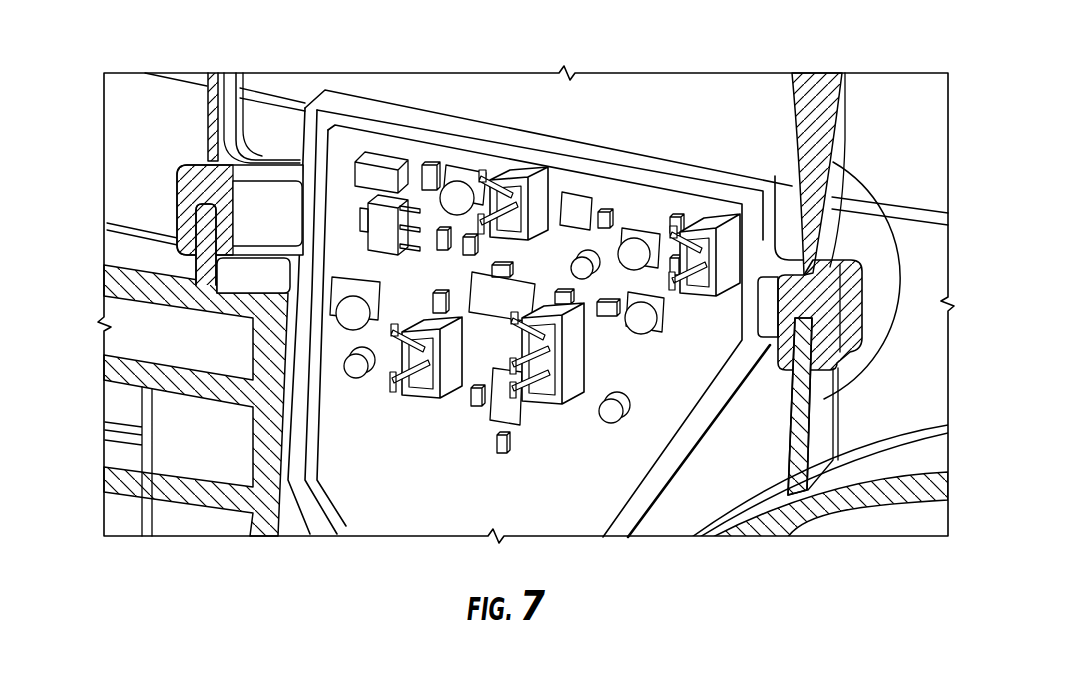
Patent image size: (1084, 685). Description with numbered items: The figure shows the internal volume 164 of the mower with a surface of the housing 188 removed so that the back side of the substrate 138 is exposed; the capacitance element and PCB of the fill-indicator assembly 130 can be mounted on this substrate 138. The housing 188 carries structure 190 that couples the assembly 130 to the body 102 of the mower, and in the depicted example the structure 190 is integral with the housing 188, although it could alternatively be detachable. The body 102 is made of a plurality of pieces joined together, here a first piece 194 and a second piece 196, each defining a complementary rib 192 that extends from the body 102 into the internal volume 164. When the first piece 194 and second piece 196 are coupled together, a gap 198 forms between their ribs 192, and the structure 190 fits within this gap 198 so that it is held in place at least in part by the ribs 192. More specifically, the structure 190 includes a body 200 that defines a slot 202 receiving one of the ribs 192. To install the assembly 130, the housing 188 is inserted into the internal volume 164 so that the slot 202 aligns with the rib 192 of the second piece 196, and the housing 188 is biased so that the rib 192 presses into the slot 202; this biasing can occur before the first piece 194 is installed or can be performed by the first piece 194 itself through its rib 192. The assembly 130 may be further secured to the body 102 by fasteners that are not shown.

The body 102 is at (172, 513).
The assembly 130 is at (562, 517).
The substrate 138 is at (439, 498).
The internal volume 164 is at (838, 503).
The housing 188 is at (306, 508).
The structure 190 is at (255, 166).
The ribs 192 is at (851, 284).
The first piece 194 is at (731, 126).
The second piece 196 is at (216, 454).
The gap 198 is at (187, 198).
The body 200 is at (196, 180).
The slot 202 is at (222, 214).